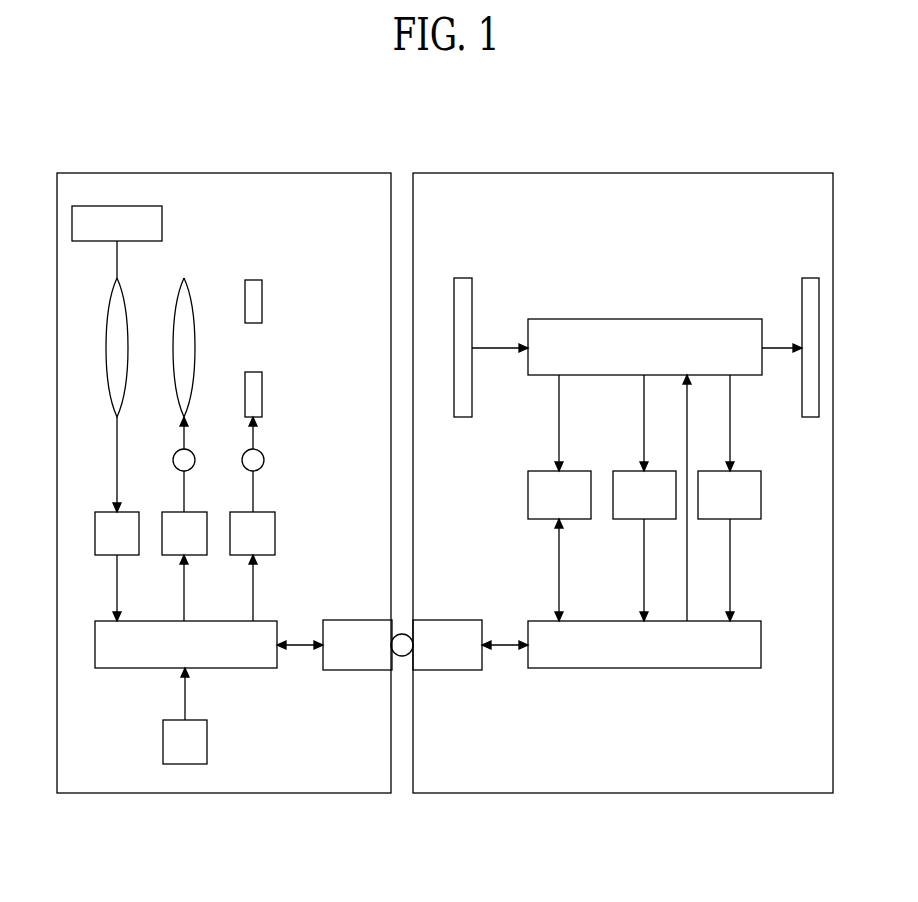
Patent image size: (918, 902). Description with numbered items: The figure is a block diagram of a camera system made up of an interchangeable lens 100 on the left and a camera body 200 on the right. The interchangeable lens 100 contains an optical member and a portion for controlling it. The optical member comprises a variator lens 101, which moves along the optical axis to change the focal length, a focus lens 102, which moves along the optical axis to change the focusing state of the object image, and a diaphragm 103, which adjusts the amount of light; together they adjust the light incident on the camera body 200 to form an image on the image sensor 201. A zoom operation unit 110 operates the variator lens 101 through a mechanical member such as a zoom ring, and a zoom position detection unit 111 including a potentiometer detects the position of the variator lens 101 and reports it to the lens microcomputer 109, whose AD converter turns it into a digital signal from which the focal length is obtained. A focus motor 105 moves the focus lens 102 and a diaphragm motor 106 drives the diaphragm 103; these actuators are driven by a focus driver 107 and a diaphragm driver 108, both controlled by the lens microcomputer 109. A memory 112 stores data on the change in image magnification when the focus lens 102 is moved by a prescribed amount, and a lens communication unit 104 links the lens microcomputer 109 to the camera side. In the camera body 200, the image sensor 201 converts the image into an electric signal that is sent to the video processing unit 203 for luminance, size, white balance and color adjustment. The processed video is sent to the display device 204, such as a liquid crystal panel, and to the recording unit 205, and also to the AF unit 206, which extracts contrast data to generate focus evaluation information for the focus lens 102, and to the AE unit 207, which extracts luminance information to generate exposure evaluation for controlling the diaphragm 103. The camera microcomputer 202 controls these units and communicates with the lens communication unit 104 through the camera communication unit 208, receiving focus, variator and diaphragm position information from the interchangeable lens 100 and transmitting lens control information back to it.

The interchangeable lens 100 is at (348, 173).
The camera body 200 is at (796, 173).
The zoom operation unit 110 is at (162, 221).
The variator lens 101 is at (121, 286).
The focus lens 102 is at (203, 272).
The diaphragm 103 is at (262, 300).
The lens communication unit 104 is at (360, 620).
The focus motor 105 is at (176, 452).
The diaphragm motor 106 is at (262, 453).
The focus driver 107 is at (167, 512).
The diaphragm driver 108 is at (270, 512).
The lens microcomputer 109 is at (127, 668).
The zoom position detection unit 111 is at (100, 512).
The memory 112 is at (207, 740).
The image sensor 201 is at (463, 278).
The camera microcomputer 202 is at (655, 668).
The video processing unit 203 is at (658, 319).
The display device 204 is at (810, 278).
The recording unit 205 is at (761, 493).
The AF unit 206 is at (535, 471).
The AE unit 207 is at (620, 471).
The camera communication unit 208 is at (447, 620).